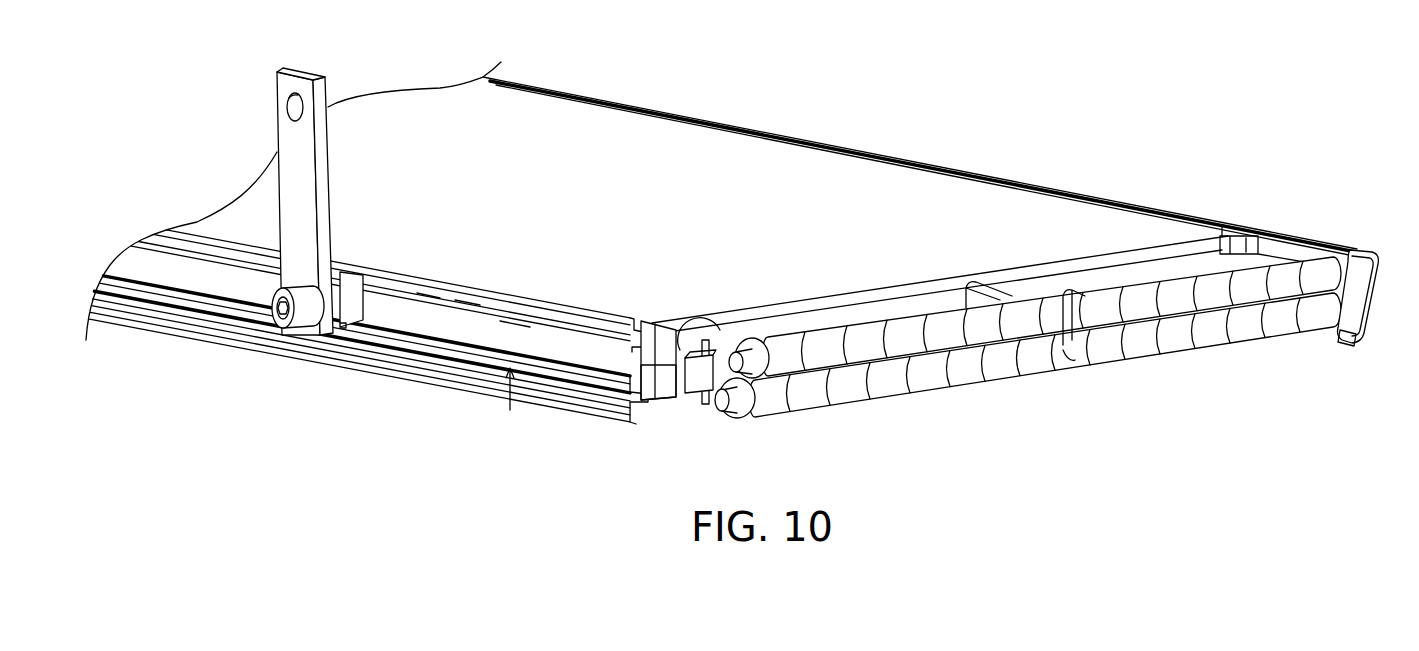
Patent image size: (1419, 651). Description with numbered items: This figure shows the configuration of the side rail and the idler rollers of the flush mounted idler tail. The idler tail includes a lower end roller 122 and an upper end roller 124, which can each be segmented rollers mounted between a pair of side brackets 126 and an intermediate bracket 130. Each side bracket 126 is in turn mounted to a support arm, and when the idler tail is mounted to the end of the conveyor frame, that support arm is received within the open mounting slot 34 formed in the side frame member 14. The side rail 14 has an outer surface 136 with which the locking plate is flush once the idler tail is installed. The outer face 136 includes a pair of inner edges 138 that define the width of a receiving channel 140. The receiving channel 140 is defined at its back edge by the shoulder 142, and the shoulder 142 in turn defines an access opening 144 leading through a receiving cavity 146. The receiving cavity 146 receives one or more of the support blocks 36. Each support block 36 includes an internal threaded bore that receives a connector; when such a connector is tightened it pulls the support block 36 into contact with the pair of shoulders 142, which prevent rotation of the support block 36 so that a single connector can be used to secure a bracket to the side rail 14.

The side frame member 14 is at (578, 310).
The open mounting slot 34 is at (603, 360).
The support block 36 is at (352, 303).
The lower end roller 122 is at (918, 380).
The upper end roller 124 is at (890, 327).
The side bracket 126 is at (1370, 262).
The intermediate bracket 130 is at (985, 292).
The outer surface 136 is at (418, 293).
The inner edge 138 is at (467, 302).
The receiving channel 140 is at (511, 321).
The shoulder 142 is at (647, 338).
The access opening 144 is at (650, 367).
The receiving cavity 146 is at (667, 343).